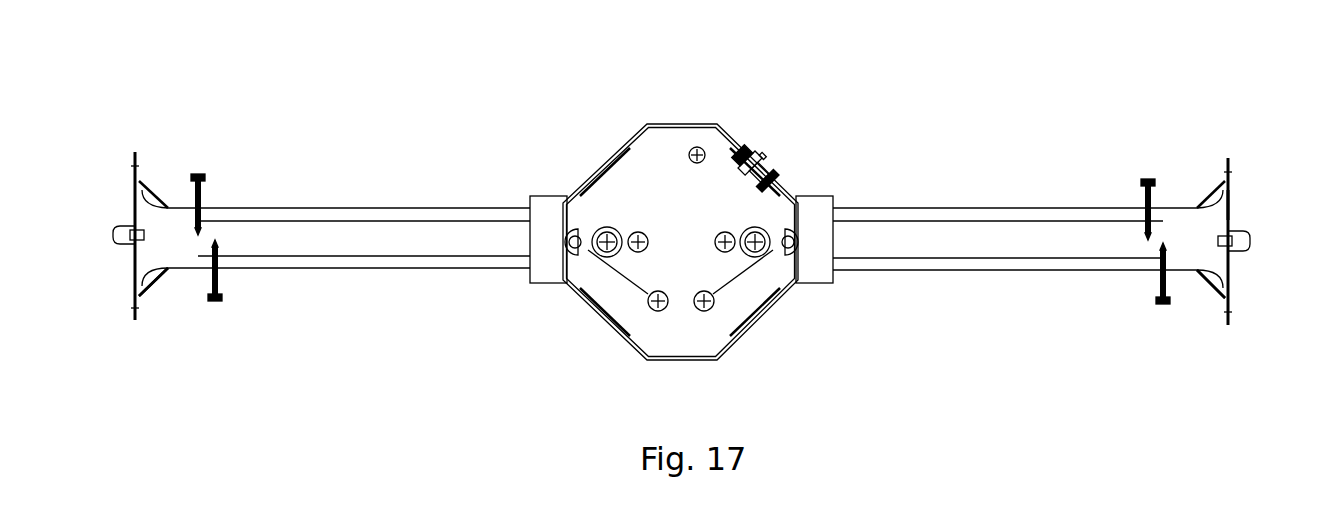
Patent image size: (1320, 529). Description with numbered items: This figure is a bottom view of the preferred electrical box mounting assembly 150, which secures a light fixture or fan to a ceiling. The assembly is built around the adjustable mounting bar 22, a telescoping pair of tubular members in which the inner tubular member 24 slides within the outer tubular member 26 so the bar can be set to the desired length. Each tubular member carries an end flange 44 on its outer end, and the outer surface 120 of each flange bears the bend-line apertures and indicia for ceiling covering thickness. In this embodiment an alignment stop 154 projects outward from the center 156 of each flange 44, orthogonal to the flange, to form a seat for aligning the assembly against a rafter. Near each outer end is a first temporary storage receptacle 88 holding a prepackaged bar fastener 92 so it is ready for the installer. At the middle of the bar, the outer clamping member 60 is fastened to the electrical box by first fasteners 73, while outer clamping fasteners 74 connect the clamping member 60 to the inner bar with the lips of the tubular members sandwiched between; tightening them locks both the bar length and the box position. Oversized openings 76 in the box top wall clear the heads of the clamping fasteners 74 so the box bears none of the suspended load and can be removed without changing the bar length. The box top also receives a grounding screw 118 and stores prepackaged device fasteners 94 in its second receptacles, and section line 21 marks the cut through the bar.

The end flange 44 is at (138, 165).
The bar fastener 92 is at (204, 176).
The first temporary storage receptacle 88 is at (204, 208).
The section line 21 is at (400, 162).
The adjustable mounting bar 22 is at (883, 327).
The inner tubular member 24 is at (402, 249).
The outer tubular member 26 is at (1002, 252).
The outer clamping member 60 is at (553, 213).
The outer clamping fastener 74 is at (606, 229).
The oversized opening 76 is at (640, 233).
The first fastener 73 is at (723, 233).
The grounding screw 118 is at (698, 146).
The electrical box mounting assembly 150 is at (805, 95).
The device fastener 94 is at (704, 310).
The outer surface 120 is at (1232, 205).
The center 156 is at (140, 242).
The alignment stop 154 is at (120, 248).